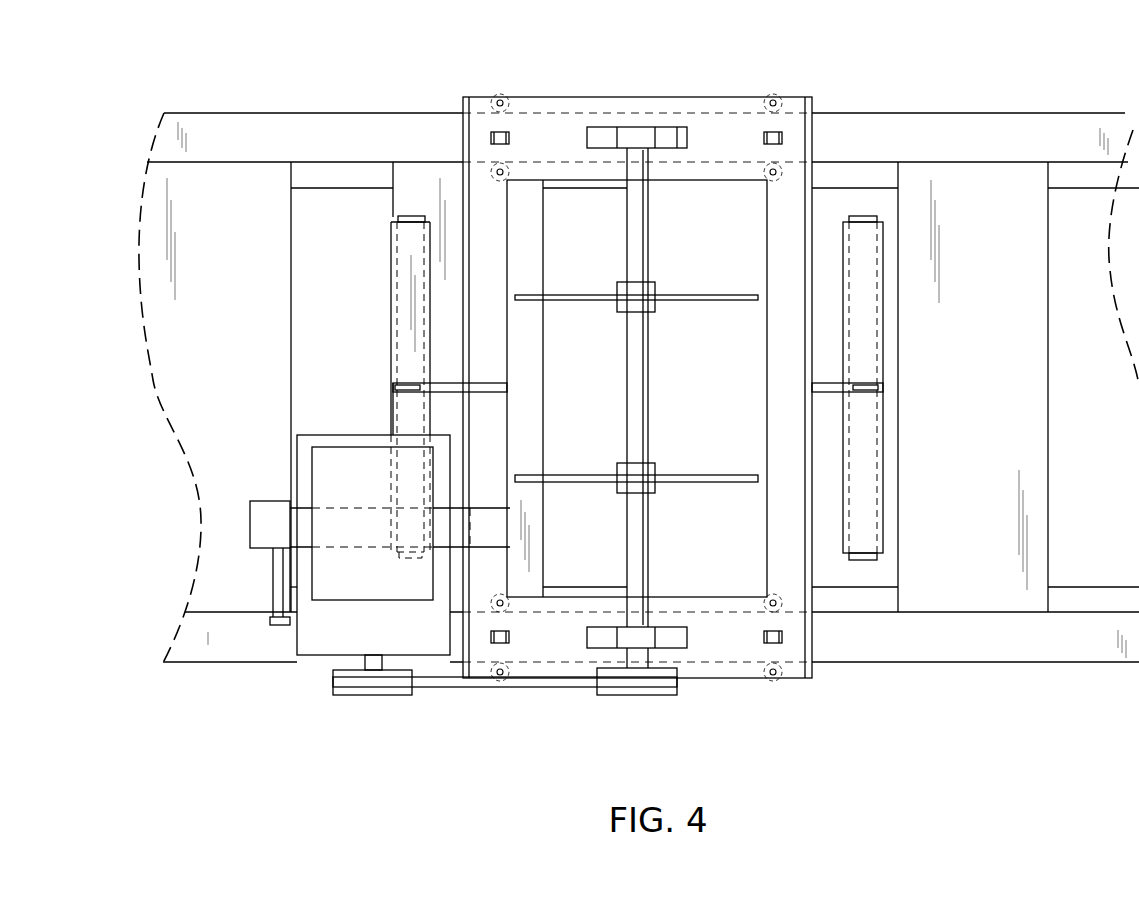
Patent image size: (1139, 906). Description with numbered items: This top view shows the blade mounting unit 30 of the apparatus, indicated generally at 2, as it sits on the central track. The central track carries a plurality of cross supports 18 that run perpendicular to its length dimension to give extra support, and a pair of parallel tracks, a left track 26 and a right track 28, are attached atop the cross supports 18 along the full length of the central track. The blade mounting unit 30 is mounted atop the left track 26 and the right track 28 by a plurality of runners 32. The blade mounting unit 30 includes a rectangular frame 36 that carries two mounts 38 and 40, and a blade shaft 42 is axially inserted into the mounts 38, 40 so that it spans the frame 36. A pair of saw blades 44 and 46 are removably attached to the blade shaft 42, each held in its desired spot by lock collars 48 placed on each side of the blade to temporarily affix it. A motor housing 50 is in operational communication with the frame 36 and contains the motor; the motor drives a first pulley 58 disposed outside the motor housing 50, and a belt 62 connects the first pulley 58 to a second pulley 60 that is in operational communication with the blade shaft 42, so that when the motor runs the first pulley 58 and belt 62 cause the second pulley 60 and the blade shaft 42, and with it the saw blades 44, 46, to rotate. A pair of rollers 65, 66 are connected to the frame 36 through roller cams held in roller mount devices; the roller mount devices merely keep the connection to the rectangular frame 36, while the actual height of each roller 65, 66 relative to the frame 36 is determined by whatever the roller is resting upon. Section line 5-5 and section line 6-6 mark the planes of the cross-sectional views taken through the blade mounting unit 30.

The conveyor system 2 is at (992, 102).
The cross supports 18 is at (962, 188).
The left track 26 is at (967, 656).
The right track 28 is at (919, 135).
The blade mounting unit 30 is at (517, 96).
The runners 32 is at (491, 137).
The rectangular frame 36 is at (532, 97).
The mount 38 is at (597, 647).
The mount 40 is at (601, 128).
The blade shaft 42 is at (646, 175).
The saw blade 44 is at (513, 479).
The saw blade 46 is at (563, 295).
The lock collars 48 is at (650, 462).
The motor housing 50 is at (313, 656).
The first pulley 58 is at (362, 696).
The second pulley 60 is at (615, 695).
The belt 62 is at (443, 686).
The roller 65 is at (862, 541).
The roller 66 is at (412, 236).
The section line 5- 5 is at (733, 583).
The section line 6- 6 is at (795, 85).